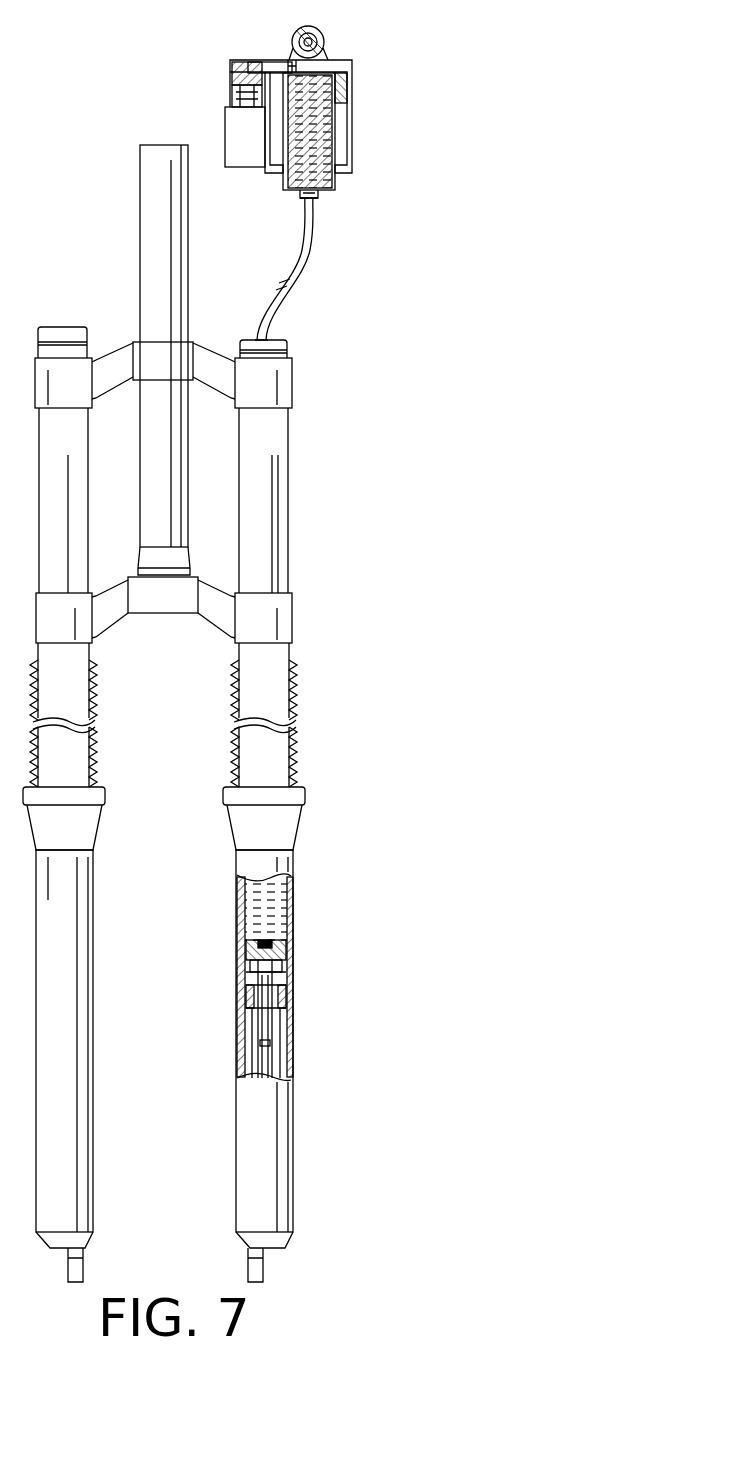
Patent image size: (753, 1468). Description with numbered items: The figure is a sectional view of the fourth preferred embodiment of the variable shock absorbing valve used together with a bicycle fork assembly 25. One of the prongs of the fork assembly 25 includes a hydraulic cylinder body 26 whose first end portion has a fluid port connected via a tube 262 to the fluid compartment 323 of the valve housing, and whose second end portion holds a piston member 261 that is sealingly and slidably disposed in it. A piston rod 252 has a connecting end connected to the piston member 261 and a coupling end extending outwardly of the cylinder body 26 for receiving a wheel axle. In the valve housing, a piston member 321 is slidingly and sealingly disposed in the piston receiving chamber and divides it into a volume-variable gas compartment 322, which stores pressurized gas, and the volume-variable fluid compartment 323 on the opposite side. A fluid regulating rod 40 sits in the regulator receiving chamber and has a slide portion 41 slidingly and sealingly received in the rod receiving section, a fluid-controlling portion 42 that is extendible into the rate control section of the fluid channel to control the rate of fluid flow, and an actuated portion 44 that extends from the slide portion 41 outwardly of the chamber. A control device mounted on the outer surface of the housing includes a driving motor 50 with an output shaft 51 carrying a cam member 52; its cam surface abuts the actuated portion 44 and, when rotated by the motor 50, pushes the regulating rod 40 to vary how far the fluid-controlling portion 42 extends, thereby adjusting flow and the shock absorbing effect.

The bicycle fork assembly 25 is at (275, 537).
The hydraulic cylinder body 26 is at (265, 903).
The piston member 261 is at (285, 956).
The piston rod 252 is at (265, 1022).
The tube 262 is at (312, 229).
The fluid regulating rod 40 is at (267, 58).
The slide portion 41 is at (288, 60).
The fluid-controlling portion 42 is at (330, 63).
The actuated portion 44 is at (266, 60).
The driving motor 50 is at (226, 130).
The output shaft 51 is at (231, 89).
The cam member 52 is at (231, 67).
The piston member 321 is at (346, 90).
The gas compartment 322 is at (345, 142).
The fluid compartment 323 is at (350, 80).